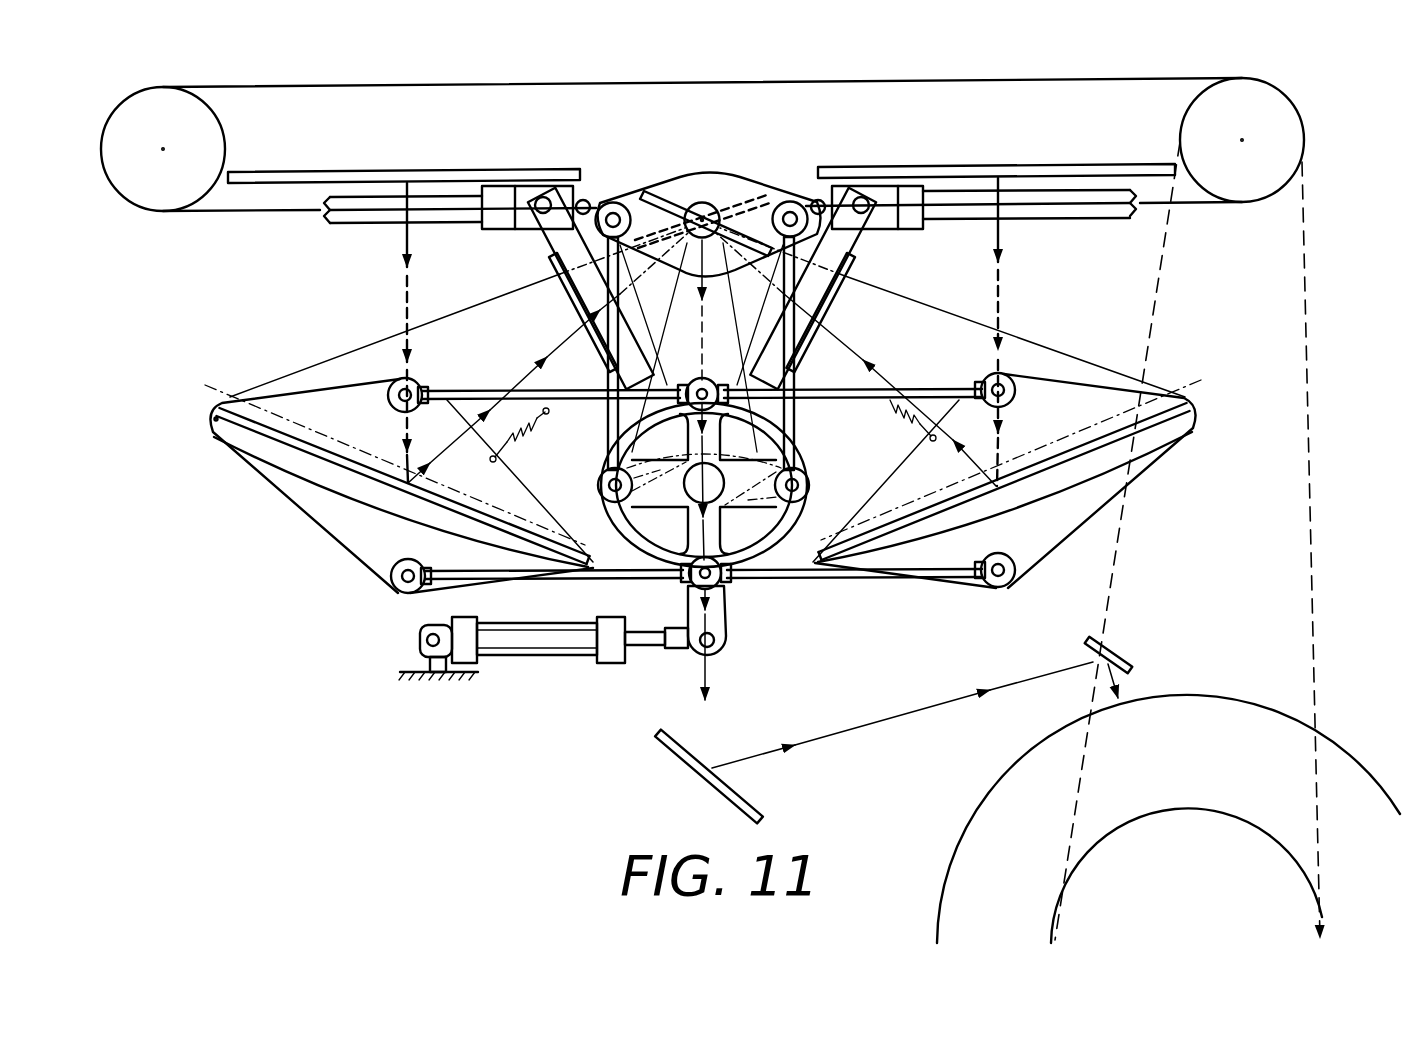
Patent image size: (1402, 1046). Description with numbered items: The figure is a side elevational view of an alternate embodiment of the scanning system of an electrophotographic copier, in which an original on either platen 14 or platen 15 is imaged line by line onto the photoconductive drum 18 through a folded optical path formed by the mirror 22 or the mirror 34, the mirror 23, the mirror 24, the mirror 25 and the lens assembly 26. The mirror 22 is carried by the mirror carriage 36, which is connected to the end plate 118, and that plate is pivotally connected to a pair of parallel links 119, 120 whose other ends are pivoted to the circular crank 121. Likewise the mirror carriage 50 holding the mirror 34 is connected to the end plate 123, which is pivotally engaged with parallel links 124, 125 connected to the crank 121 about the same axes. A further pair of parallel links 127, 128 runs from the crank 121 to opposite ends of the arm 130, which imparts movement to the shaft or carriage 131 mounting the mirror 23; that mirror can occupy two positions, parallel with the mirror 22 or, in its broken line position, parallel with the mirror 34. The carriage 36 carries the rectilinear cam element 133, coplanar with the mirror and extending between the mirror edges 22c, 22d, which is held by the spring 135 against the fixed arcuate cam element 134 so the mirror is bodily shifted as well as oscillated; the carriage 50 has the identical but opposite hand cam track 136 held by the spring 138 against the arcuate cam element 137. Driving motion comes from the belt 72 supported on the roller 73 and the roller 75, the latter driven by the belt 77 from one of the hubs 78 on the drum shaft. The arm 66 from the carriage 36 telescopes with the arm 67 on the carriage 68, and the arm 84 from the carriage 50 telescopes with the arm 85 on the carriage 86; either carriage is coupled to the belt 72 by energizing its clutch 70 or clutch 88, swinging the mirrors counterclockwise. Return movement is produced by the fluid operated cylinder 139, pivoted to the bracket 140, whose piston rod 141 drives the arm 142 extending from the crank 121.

The roller 73 is at (136, 112).
The roller 75 is at (1284, 120).
The belt 72 is at (268, 214).
The platen 14 is at (330, 170).
The platen 15 is at (998, 165).
The clutch 70 is at (500, 186).
The clutch 88 is at (912, 186).
The carriage 86 is at (838, 186).
The carriage 68 is at (527, 186).
The arm 84 is at (820, 300).
The arm 66 is at (585, 296).
The arm 67 is at (552, 240).
The arm 85 is at (860, 238).
The mirror 23 is at (648, 190).
The arm 130 is at (690, 185).
The shaft or carriage 131 is at (716, 200).
The parallel link 128 is at (607, 390).
The parallel link 127 is at (796, 388).
The circular crank 121 is at (600, 486).
The lens assembly 26 is at (704, 485).
The parallel link 119 is at (486, 390).
The parallel link 124 is at (940, 389).
The parallel link 120 is at (494, 582).
The parallel link 125 is at (806, 580).
The rectilinear cam element 133 is at (236, 400).
The arcuate cam element 134 is at (250, 402).
The end plate 118 is at (320, 517).
The mirror 22 is at (218, 408).
The mirror edge 22c is at (215, 421).
The mirror edge 22d is at (592, 576).
The mirror carriage 36 is at (290, 466).
The spring 135 is at (526, 431).
The spring 138 is at (896, 421).
The rectilinear cam track 136 is at (1176, 396).
The arcuate cam element 137 is at (1106, 430).
The end plate 123 is at (1130, 470).
The mirror 34 is at (1190, 396).
The mirror carriage 50 is at (1020, 496).
The bracket 140 is at (420, 650).
The fluid operated cylinder 139 is at (540, 655).
The piston rod 141 is at (660, 649).
The arm 142 is at (724, 624).
The mirror 24 is at (755, 800).
The mirror 25 is at (1085, 650).
The drum 18 is at (1207, 695).
The hub 78 is at (1170, 810).
The belt 77 is at (1313, 420).